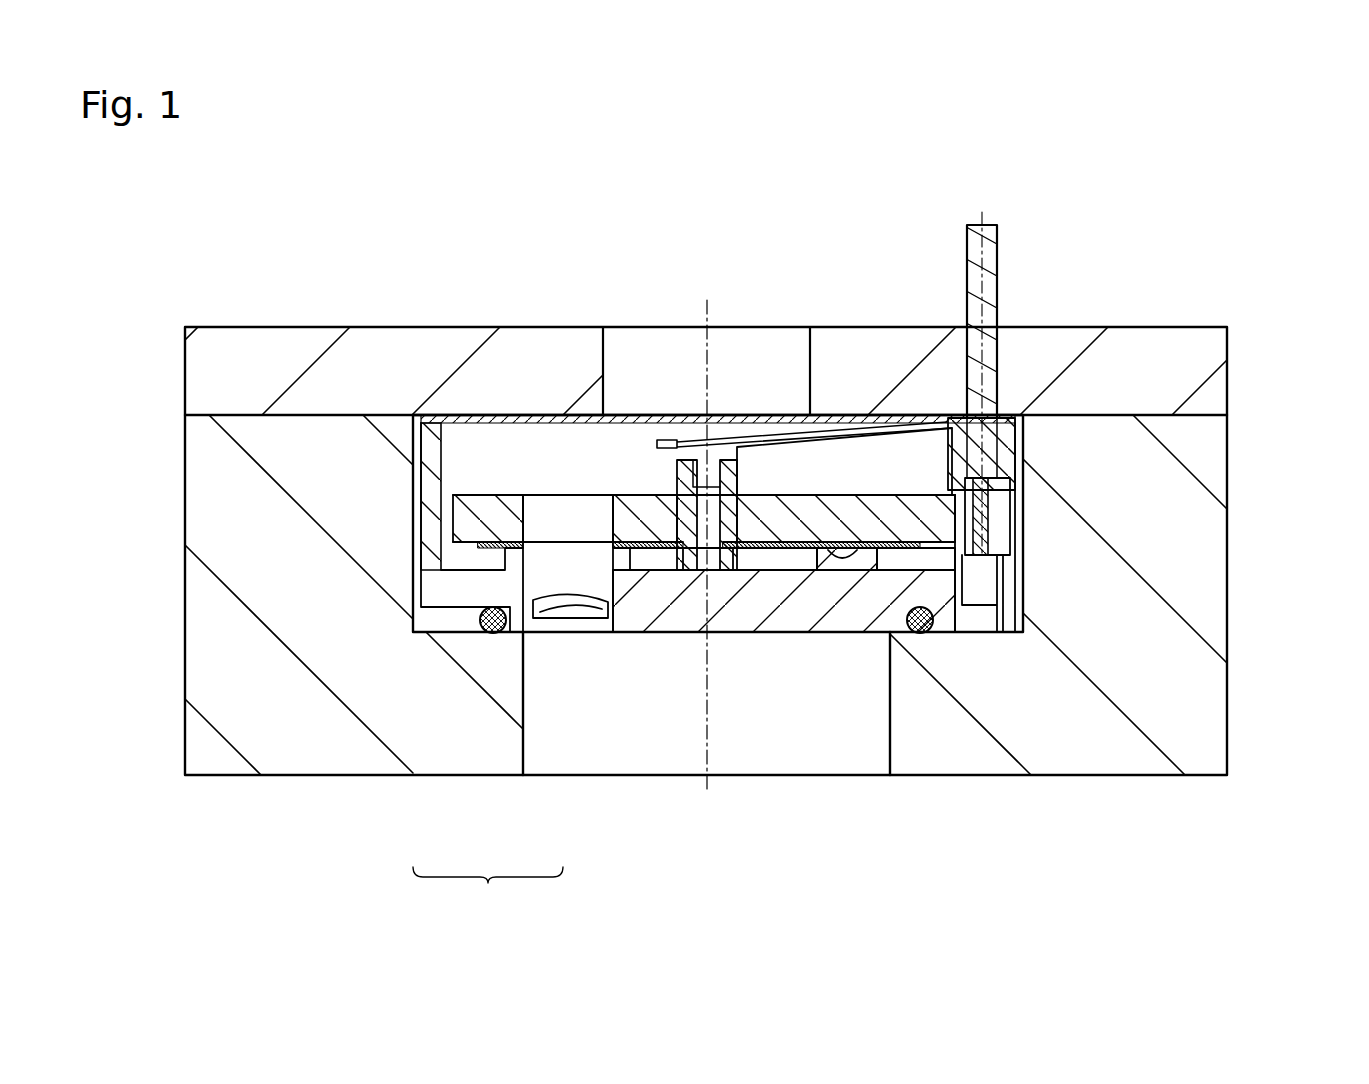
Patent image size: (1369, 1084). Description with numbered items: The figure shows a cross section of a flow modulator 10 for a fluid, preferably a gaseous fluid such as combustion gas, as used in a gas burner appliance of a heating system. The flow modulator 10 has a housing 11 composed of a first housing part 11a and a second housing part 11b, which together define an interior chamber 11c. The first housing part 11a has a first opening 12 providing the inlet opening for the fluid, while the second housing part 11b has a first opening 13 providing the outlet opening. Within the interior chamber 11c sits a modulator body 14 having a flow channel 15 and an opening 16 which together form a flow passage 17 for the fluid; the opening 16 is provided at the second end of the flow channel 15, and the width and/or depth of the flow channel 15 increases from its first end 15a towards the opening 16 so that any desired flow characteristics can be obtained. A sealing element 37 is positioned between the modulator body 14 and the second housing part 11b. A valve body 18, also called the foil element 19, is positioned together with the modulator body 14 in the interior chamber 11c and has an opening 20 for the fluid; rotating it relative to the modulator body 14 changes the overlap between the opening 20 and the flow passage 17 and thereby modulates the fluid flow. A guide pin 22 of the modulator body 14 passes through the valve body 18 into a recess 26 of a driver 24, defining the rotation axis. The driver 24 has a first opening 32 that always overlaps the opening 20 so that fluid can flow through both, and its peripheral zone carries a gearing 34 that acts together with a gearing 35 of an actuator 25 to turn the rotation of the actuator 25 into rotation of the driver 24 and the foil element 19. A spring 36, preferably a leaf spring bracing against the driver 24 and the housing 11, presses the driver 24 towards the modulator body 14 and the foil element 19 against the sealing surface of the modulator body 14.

The flow modulator 10 is at (1147, 226).
The housing 11 is at (1208, 320).
The first housing part 11a is at (1200, 373).
The second housing part 11b is at (1200, 587).
The interior chamber 11c is at (514, 455).
The first opening 12 is at (741, 346).
The first opening 13 is at (762, 744).
The modulator body 14 is at (650, 650).
The flow channel 15 is at (494, 630).
The first end 15a is at (851, 638).
The opening 16 is at (562, 645).
The flow passage 17 is at (488, 893).
The valve body 18 is at (475, 548).
The foil element 19 is at (512, 523).
The opening 20 is at (545, 548).
The guide pin 22 is at (677, 470).
The driver 24 is at (653, 487).
The actuator 25 is at (1003, 245).
The recess 26 is at (735, 477).
The first opening 32 is at (575, 505).
The gearing 34 is at (1003, 535).
The gearing 35 is at (981, 454).
The spring 36 is at (779, 437).
The sealing element 37 is at (921, 636).